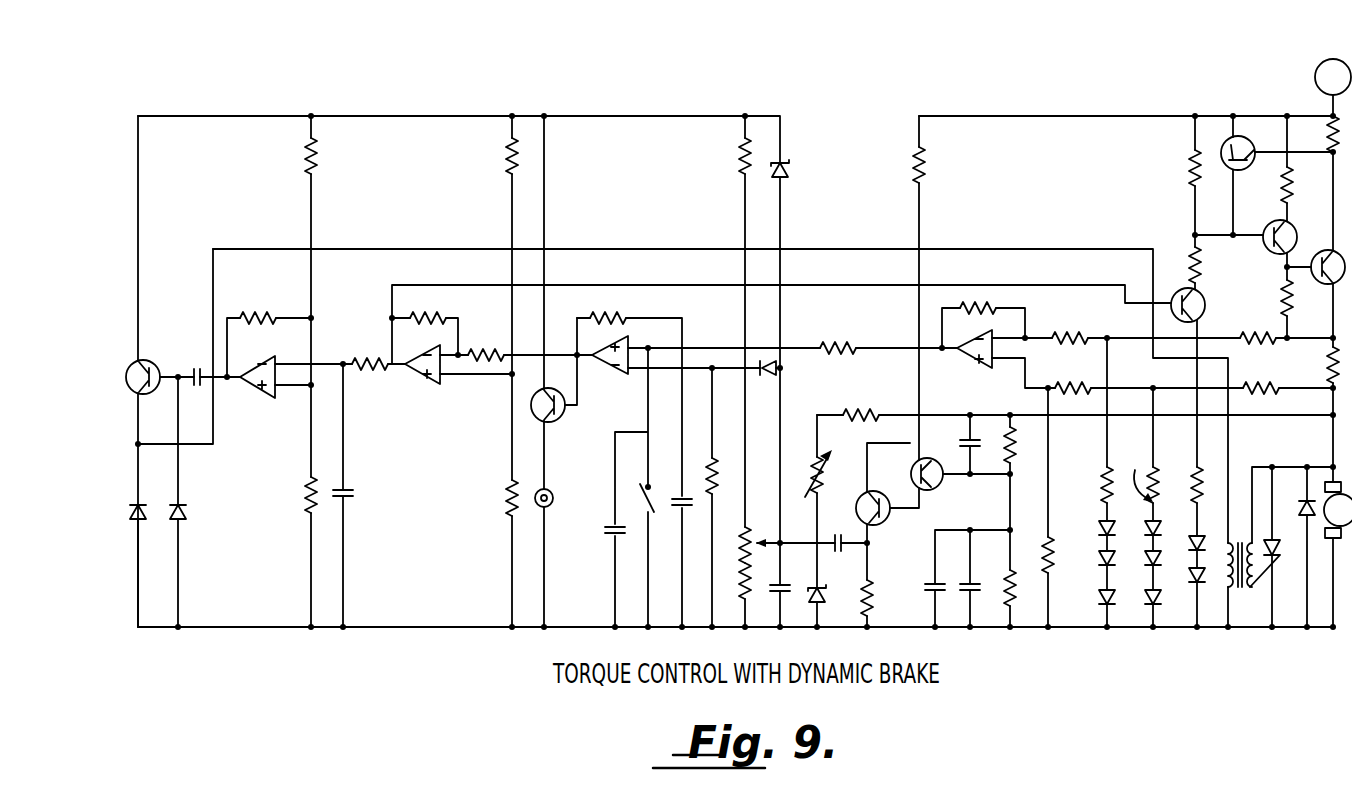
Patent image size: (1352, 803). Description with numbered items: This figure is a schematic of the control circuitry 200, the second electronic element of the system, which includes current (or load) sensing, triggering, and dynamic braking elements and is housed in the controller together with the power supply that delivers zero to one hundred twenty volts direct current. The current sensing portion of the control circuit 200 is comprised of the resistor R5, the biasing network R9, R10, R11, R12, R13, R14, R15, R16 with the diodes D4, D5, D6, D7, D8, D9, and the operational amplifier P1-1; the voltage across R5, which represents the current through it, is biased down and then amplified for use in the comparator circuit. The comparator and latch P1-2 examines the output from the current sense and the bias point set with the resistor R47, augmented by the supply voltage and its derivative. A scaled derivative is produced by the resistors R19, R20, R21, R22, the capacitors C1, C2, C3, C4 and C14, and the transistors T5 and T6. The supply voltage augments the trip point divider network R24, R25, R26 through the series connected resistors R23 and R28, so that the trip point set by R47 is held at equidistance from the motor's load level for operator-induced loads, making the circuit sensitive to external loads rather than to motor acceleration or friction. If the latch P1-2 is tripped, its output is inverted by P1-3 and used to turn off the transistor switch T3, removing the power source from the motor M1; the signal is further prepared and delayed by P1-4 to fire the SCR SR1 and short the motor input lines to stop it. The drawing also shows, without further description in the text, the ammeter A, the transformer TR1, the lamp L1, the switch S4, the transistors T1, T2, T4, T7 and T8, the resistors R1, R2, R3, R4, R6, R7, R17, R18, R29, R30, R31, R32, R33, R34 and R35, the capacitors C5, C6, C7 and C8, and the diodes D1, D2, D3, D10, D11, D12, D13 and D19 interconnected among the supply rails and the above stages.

The control circuitry 200 is at (909, 117).
The resistor R1 is at (1179, 168).
The resistor R2 is at (1319, 134).
The resistor R3 is at (1272, 188).
The resistor R4 is at (1275, 292).
The resistor R5 is at (1318, 365).
The resistor R6 is at (1209, 265).
The resistor R7 is at (1186, 479).
The resistor R9 is at (1258, 323).
The resistor R10 is at (1261, 371).
The resistor R11 is at (1090, 479).
The resistor R12 is at (1138, 471).
The resistor R13 is at (1075, 325).
The resistor R14 is at (1073, 373).
The resistor R15 is at (1067, 553).
The resistor R16 is at (1000, 306).
The resistor R17 is at (839, 332).
The resistor R18 is at (614, 305).
The resistor R19 is at (939, 165).
The resistor R20 is at (1024, 457).
The resistor R21 is at (1028, 588).
The resistor R22 is at (884, 598).
The resistor R23 is at (832, 473).
The resistor R24 is at (724, 158).
The resistor R25 is at (760, 569).
The resistor R26 is at (725, 461).
The resistor R28 is at (672, 448).
The resistor R29 is at (493, 158).
The resistor R30 is at (486, 342).
The resistor R31 is at (428, 305).
The resistor R32 is at (368, 348).
The resistor R33 is at (330, 156).
The resistor R34 is at (292, 495).
The resistor R35 is at (260, 301).
The resistor R47 is at (759, 532).
The capacitor C1 is at (943, 569).
The capacitor C2 is at (978, 569).
The capacitor C3 is at (833, 527).
The capacitor C4 is at (788, 571).
The capacitor C5 is at (674, 484).
The capacitor C6 is at (601, 531).
The capacitor C7 is at (193, 362).
The capacitor C8 is at (354, 494).
The capacitor C14 is at (954, 436).
The diode D1 is at (1298, 494).
The diode D2 is at (1189, 529).
The diode D3 is at (1189, 588).
The diode D4 is at (1140, 519).
The diode D5 is at (1141, 548).
The diode D6 is at (1141, 589).
The diode D7 is at (1096, 519).
The diode D8 is at (1096, 571).
The diode D9 is at (1096, 604).
The diode D10 is at (834, 580).
The diode D11 is at (799, 171).
The diode D12 is at (195, 499).
The diode D13 is at (152, 530).
The diode D19 is at (765, 387).
The transistor T1 is at (1248, 145).
The transistor T2 is at (1291, 227).
The transistor switch T3 is at (1323, 285).
The transistor T4 is at (1202, 303).
The transistor T5 is at (905, 509).
The transistor T6 is at (907, 474).
The transistor T7 is at (558, 419).
The transistor T8 is at (145, 360).
The operational amplifier P1-1 is at (972, 369).
The comparator and latch P1-2 is at (613, 373).
The inverter P1-3 is at (424, 384).
The delay stage P1-4 is at (260, 394).
The lamp L1 is at (555, 485).
The switch S4 is at (636, 485).
The SCR SR1 is at (1278, 564).
The transformer TR1 is at (1245, 583).
The motor M1 is at (1334, 521).
The ammeter A is at (1333, 77).